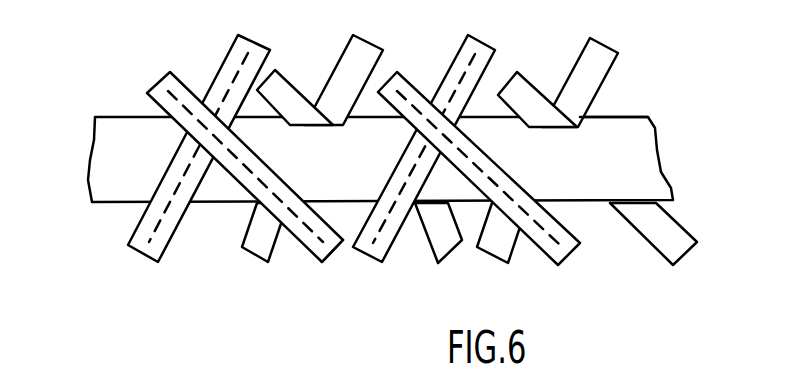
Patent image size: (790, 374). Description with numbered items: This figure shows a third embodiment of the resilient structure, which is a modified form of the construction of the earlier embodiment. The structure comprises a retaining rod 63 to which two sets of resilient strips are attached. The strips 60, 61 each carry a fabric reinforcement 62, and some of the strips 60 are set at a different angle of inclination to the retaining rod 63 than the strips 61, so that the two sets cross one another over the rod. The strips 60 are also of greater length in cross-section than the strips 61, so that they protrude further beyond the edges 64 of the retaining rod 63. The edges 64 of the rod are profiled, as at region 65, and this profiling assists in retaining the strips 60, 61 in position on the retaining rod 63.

The strips 60 is at (259, 50).
The strips 61 is at (160, 96).
The fabric reinforcement 62 is at (322, 247).
The retaining rod 63 is at (100, 157).
The edges 64 is at (618, 115).
The region 65 is at (563, 128).